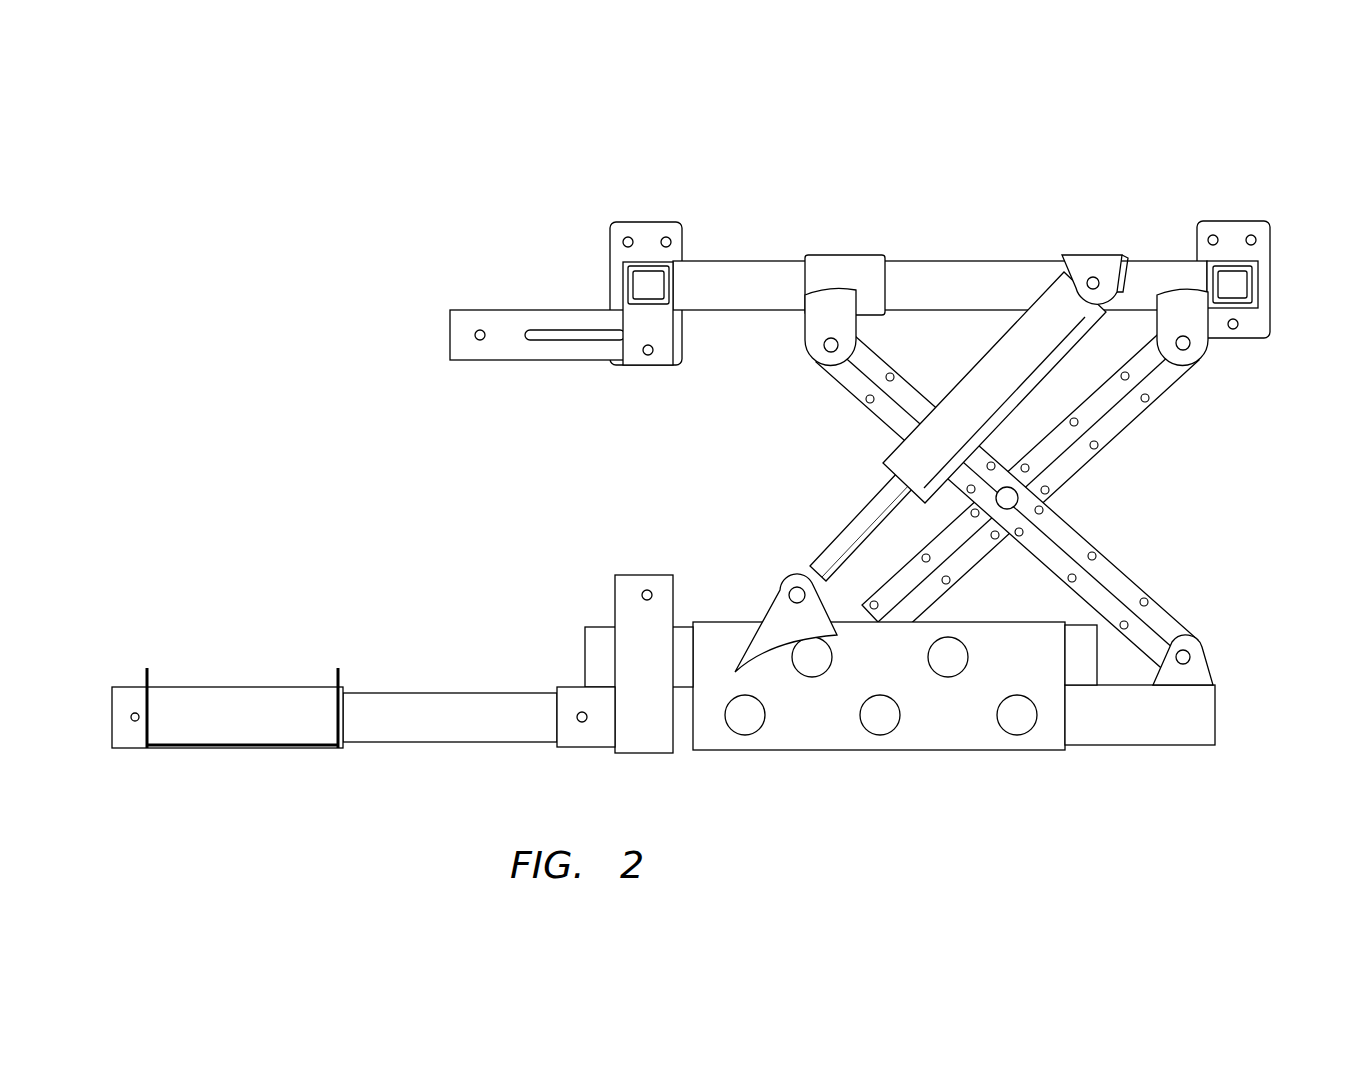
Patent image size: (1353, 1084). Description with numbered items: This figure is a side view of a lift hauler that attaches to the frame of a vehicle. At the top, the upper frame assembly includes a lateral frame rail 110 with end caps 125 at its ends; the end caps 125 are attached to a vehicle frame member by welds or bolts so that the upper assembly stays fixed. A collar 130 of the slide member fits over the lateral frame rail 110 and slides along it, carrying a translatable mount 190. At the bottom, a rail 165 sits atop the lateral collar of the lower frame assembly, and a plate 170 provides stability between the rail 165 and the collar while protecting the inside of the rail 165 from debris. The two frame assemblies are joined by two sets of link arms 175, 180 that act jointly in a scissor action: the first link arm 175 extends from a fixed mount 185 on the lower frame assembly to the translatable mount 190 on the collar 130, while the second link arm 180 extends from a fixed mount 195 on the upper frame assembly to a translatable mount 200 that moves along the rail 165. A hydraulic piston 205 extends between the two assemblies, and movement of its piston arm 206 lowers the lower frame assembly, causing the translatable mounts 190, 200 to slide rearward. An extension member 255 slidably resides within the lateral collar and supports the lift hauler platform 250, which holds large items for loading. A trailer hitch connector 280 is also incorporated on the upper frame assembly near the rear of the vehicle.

The lateral frame rail 110 is at (735, 258).
The end cap 125 is at (613, 220).
The collar 130 is at (835, 255).
The rail 165 is at (595, 645).
The plate 170 is at (830, 752).
The link arm 175 is at (1122, 555).
The link arm 180 is at (1150, 400).
The fixed mount 185 is at (1213, 667).
The translatable mount 190 is at (843, 310).
The fixed mount 195 is at (1092, 255).
The translatable mount 200 is at (765, 603).
The hydraulic piston 205 is at (883, 457).
The piston arm 206 is at (835, 525).
The lift hauler platform 250 is at (218, 750).
The extension member 255 is at (434, 690).
The trailer hitch connector 280 is at (503, 310).